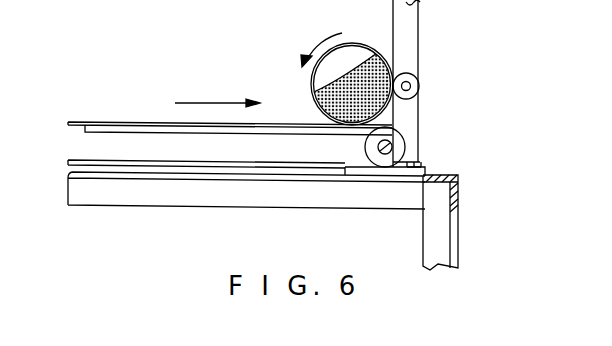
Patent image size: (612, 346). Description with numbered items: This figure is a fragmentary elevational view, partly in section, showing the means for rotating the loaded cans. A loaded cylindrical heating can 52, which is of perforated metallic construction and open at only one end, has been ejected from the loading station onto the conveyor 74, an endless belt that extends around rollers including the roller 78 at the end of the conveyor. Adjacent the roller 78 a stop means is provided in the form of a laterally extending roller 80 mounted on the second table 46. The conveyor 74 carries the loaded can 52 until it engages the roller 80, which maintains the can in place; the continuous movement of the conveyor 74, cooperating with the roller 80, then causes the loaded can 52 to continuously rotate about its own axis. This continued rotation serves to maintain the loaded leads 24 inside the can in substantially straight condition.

The leads 24 is at (326, 82).
The second table 46 is at (466, 222).
The cylindrical heating can 52 is at (333, 67).
The conveyor 74 is at (139, 87).
The roller 78 is at (397, 145).
The laterally extending roller 80 is at (413, 85).